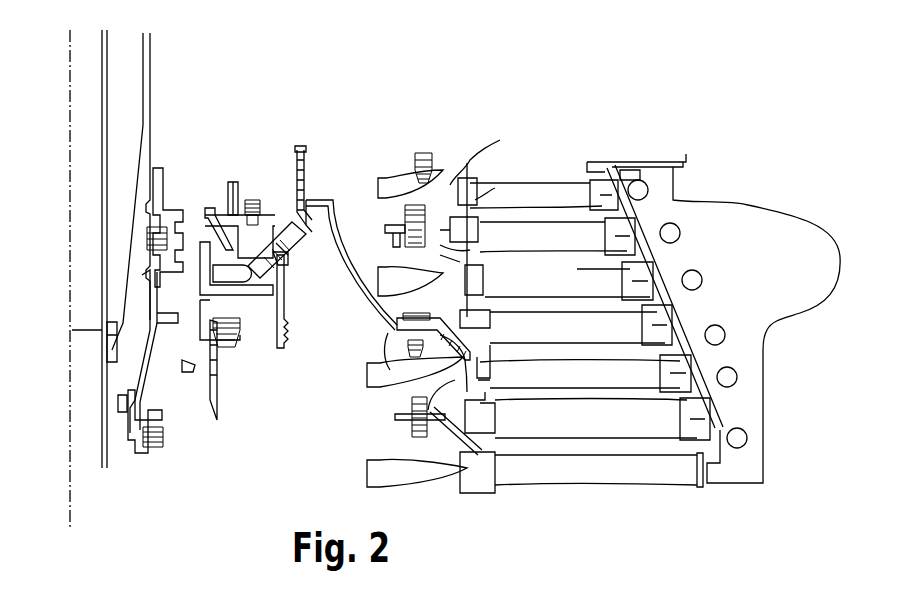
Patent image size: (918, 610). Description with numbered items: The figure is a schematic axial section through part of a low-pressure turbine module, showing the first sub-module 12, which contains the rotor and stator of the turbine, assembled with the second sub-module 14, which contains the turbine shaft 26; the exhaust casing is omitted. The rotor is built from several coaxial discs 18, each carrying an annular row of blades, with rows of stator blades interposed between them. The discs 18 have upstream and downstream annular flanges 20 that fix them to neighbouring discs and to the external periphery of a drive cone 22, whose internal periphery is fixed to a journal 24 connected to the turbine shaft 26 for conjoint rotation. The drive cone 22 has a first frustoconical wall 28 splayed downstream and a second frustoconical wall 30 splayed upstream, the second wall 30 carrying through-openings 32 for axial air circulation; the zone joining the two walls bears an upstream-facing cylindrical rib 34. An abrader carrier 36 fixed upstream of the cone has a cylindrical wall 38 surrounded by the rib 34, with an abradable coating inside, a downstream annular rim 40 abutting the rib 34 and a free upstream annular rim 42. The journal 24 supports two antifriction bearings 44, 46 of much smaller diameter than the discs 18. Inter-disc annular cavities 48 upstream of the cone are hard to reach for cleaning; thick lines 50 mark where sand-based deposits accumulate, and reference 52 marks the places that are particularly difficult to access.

The first sub-module 12 is at (638, 132).
The second sub-module 14 is at (156, 69).
The disc 18 is at (386, 188).
The annular flanges 20 is at (465, 207).
The drive cone 22 is at (360, 308).
The journal 24 is at (186, 372).
The turbine shaft 26 is at (149, 127).
The first frustoconical wall 28 is at (337, 264).
The second frustoconical wall 30 is at (260, 205).
The through-openings 32 is at (282, 210).
The cylindrical rib 34 is at (330, 208).
The abrader carrier 36 is at (216, 212).
The cylindrical wall 38 is at (300, 150).
The radially outer downstream annular rim 40 is at (310, 202).
The radially outer upstream annular rim 42 is at (305, 185).
The antifriction bearing 44 is at (160, 238).
The antifriction bearing 46 is at (130, 435).
The inter-disc annular cavities 48 is at (483, 285).
The thick lines 50 is at (388, 238).
The places particularly difficult to access 52 is at (473, 256).